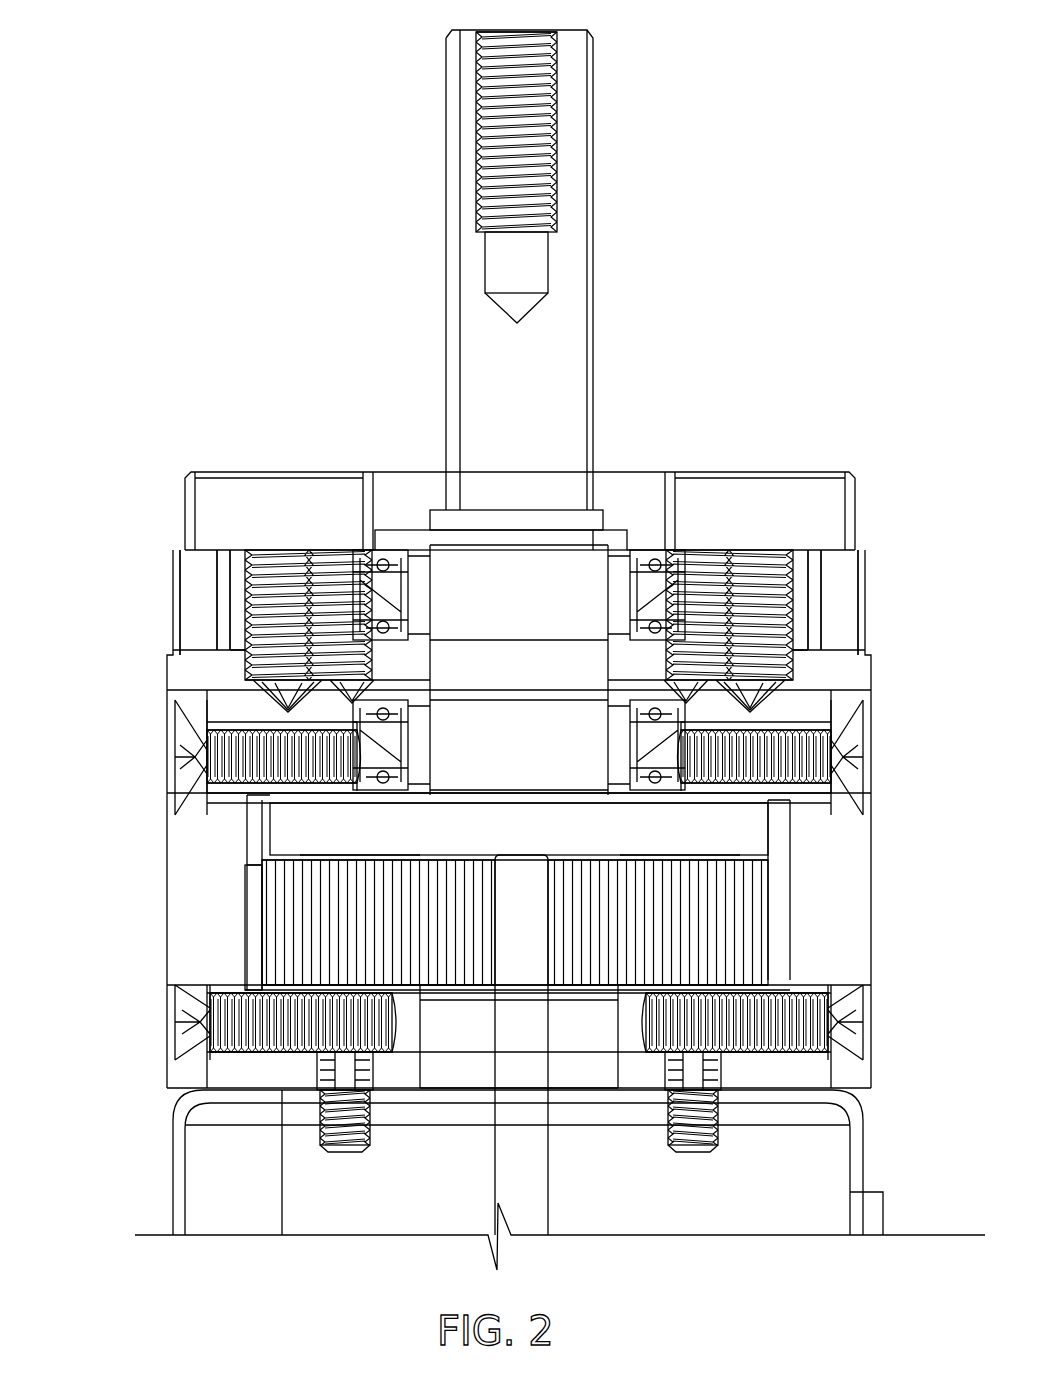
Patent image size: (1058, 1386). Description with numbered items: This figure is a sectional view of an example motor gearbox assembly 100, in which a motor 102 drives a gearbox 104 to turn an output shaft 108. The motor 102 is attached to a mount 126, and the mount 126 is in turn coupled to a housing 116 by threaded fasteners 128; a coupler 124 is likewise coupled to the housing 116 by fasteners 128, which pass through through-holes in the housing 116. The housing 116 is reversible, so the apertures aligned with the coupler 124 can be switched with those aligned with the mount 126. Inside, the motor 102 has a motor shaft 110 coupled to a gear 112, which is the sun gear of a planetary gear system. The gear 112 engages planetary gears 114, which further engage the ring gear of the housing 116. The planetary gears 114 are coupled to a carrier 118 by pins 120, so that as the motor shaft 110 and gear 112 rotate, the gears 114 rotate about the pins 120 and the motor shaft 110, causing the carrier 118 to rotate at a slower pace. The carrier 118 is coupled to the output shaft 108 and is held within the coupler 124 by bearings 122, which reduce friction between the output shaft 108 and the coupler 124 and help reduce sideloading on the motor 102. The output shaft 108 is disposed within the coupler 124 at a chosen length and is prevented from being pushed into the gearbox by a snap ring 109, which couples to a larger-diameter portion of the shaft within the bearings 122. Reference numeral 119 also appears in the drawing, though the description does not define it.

The assembly 100 is at (240, 172).
The motor 102 is at (175, 1130).
The gearbox 104 is at (138, 886).
The output shaft 108 is at (475, 380).
The snap ring 109 is at (612, 540).
The motor shaft 110 is at (525, 1080).
The gear 112 is at (615, 1010).
The planetary gears 114 is at (253, 887).
The housing 116 is at (848, 942).
The carrier 118 is at (755, 840).
The coil 119 is at (707, 953).
The pins 120 is at (270, 848).
The bearings 122 is at (380, 595).
The coupler 124 is at (785, 505).
The mount 126 is at (775, 1070).
The fasteners 128 is at (175, 757).